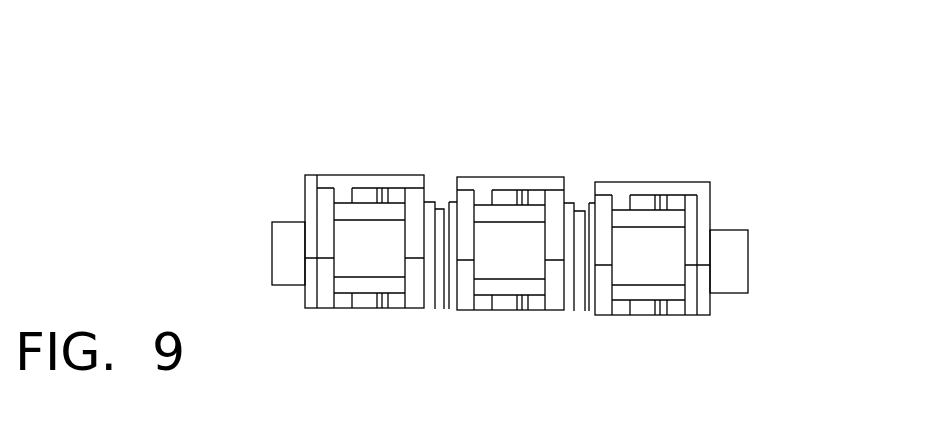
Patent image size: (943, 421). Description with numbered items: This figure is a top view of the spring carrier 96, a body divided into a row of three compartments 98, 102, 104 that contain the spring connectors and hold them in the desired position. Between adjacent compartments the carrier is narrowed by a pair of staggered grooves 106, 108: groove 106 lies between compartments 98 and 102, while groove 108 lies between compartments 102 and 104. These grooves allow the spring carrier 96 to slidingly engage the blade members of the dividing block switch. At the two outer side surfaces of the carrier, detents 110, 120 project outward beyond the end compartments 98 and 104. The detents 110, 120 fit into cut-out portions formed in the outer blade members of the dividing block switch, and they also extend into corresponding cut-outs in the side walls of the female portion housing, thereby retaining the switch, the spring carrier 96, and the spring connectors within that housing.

The spring carrier 96 is at (752, 168).
The compartment 98 is at (668, 270).
The compartment 102 is at (534, 263).
The compartment 104 is at (394, 261).
The staggered groove 106 is at (579, 189).
The staggered groove 108 is at (439, 188).
The detent 110 is at (740, 268).
The detent 120 is at (282, 257).